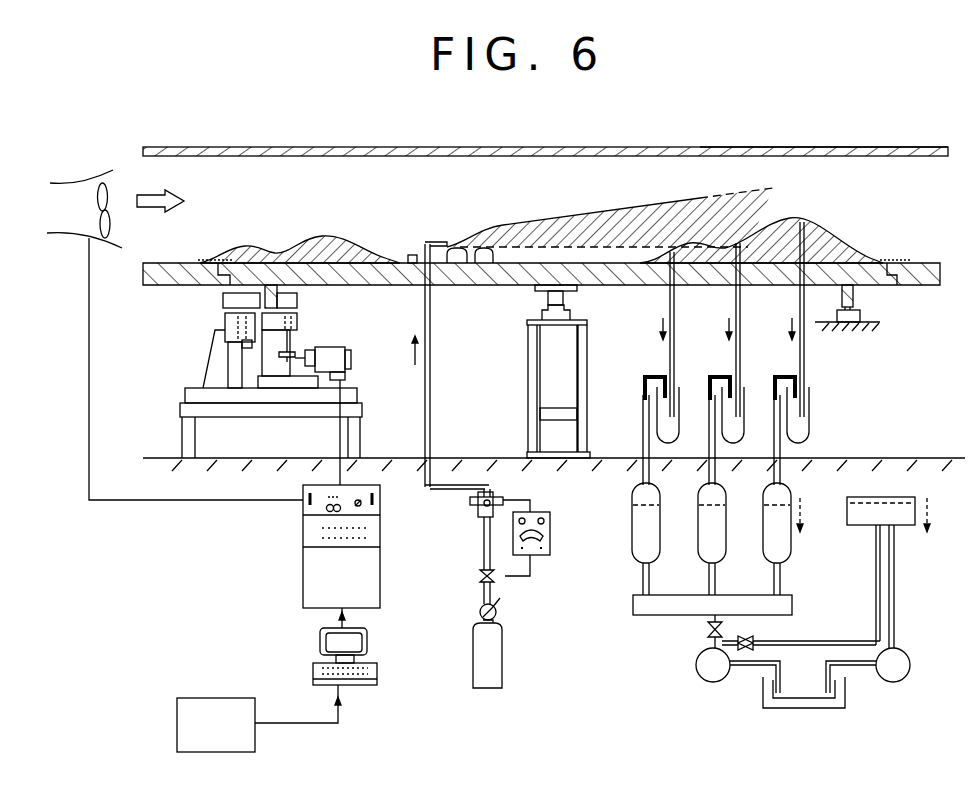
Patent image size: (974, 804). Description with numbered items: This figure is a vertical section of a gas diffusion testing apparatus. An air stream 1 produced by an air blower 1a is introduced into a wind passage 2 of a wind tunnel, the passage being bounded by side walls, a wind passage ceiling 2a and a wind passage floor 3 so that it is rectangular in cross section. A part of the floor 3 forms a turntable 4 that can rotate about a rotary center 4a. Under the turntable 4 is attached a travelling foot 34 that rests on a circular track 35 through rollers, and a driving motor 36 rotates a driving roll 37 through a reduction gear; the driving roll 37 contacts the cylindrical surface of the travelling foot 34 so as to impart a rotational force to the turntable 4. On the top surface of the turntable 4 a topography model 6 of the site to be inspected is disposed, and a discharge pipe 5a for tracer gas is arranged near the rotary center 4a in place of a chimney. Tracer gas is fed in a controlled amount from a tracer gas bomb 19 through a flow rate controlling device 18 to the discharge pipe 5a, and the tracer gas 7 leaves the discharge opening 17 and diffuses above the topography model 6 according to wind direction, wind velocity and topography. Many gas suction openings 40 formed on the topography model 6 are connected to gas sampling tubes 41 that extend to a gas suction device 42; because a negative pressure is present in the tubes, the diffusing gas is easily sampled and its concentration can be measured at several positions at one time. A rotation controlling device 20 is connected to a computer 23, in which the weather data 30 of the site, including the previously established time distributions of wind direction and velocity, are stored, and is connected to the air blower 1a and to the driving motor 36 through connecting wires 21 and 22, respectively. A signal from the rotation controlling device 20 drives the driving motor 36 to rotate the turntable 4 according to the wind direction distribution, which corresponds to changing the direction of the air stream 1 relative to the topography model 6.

The air stream 1 is at (157, 190).
The air blower 1a is at (82, 182).
The wind passage 2 is at (307, 190).
The wind passage ceiling 2a is at (829, 147).
The wind passage floor 3 is at (927, 263).
The turntable 4 is at (885, 286).
The rotary center 4a is at (555, 377).
The discharge pipe 5a is at (427, 242).
The topography model 6 is at (837, 257).
The tracer gas 7 is at (627, 215).
The discharge opening 17 is at (437, 243).
The flow rate controlling device 18 is at (525, 583).
The tracer gas bomb 19 is at (503, 660).
The rotation controlling device 20 is at (303, 533).
The connecting wire 21 is at (89, 390).
The connecting wire 22 is at (343, 435).
The computer 23 is at (378, 673).
The weather data 30 is at (200, 698).
The travelling foot 34 is at (853, 303).
The circular track 35 is at (849, 323).
The driving motor 36 is at (345, 347).
The driving roll 37 is at (298, 303).
The gas suction openings 40 is at (805, 228).
The gas sampling tubes 41 is at (800, 432).
The gas suction device 42 is at (681, 622).